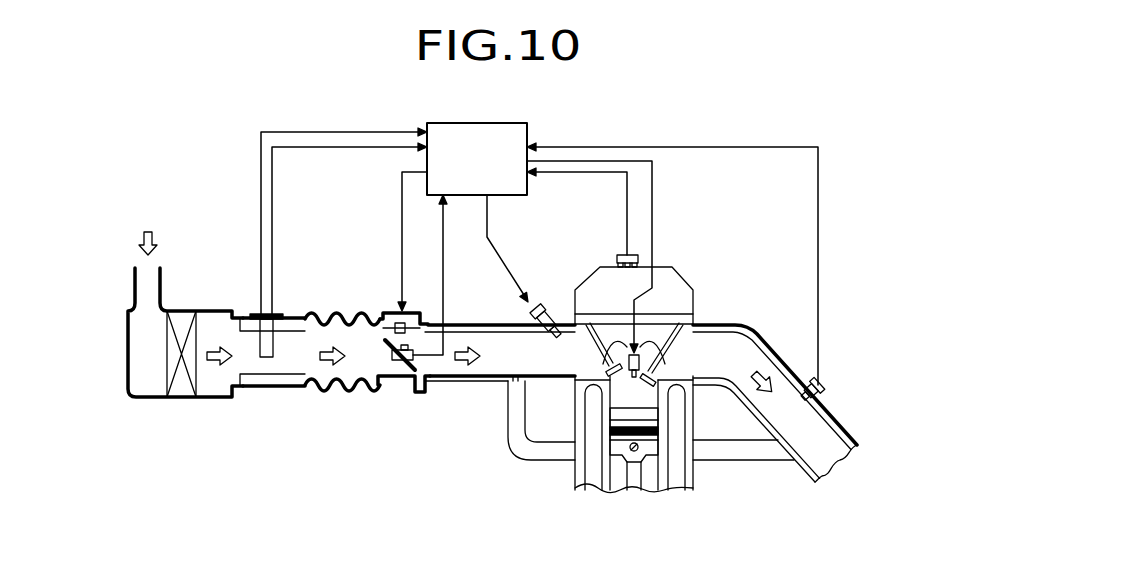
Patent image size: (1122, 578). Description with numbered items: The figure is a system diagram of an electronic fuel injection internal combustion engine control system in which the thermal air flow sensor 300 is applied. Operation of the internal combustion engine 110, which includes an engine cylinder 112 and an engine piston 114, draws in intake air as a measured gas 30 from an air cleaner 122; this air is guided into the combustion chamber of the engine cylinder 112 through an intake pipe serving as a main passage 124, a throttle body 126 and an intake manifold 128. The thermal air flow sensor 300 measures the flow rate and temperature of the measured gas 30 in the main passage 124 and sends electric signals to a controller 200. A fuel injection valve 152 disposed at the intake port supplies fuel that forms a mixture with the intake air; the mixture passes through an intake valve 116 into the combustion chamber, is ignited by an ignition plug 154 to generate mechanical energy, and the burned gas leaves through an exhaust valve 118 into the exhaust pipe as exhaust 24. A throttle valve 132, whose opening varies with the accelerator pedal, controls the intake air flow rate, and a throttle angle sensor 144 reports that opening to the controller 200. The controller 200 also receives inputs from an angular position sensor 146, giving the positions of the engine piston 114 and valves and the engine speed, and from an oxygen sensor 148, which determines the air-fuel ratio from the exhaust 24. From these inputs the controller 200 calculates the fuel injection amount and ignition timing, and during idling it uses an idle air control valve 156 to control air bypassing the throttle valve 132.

The controller 200 is at (520, 121).
The measured gas 30 is at (163, 235).
The air cleaner 122 is at (192, 400).
The thermal air flow sensor 300 is at (287, 313).
The main passage 124 is at (272, 386).
The throttle body 126 is at (392, 393).
The throttle valve 132 is at (404, 386).
The idle air control valve 156 is at (385, 313).
The throttle angle sensor 144 is at (422, 318).
The intake manifold 128 is at (503, 380).
The fuel injection valve 152 is at (536, 304).
The intake valve 116 is at (629, 374).
The angular position sensor 146 is at (612, 253).
The exhaust valve 118 is at (688, 310).
The ignition plug 154 is at (605, 397).
The internal combustion engine 110 is at (692, 490).
The engine cylinder 112 is at (617, 442).
The engine piston 114 is at (628, 460).
The exhaust 24 is at (763, 376).
The oxygen sensor 148 is at (820, 388).